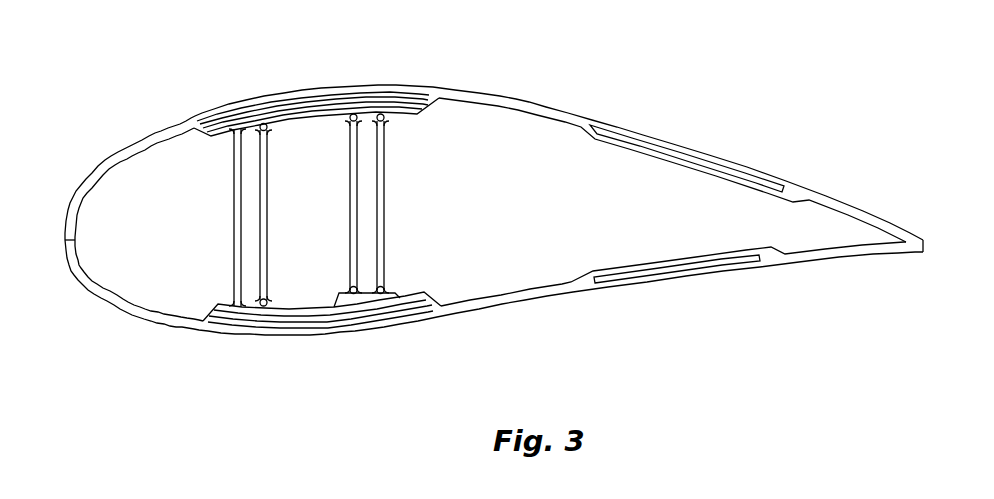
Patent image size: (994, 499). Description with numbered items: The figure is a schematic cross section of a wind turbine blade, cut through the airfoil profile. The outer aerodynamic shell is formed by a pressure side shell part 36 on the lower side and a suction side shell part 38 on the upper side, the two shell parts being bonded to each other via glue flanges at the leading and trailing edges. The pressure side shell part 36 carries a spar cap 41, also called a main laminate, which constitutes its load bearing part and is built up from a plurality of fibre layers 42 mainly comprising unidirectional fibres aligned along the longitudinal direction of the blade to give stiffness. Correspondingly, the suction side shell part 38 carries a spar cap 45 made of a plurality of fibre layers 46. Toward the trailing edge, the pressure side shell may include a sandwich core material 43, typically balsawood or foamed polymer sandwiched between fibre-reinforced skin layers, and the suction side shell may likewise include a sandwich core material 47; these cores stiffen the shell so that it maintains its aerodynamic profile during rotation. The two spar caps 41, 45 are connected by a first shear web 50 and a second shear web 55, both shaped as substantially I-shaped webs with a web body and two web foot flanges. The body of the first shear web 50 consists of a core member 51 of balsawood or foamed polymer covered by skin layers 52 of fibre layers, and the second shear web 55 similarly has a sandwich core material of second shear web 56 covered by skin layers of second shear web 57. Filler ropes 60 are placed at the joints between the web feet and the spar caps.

The pressure side shell part 36 is at (547, 305).
The suction side shell part 38 is at (531, 100).
The spar cap 41 is at (391, 323).
The fibre layers 42 is at (333, 327).
The sandwich core material 43 is at (682, 282).
The spar cap 45 is at (284, 93).
The fibre layers 46 is at (391, 110).
The sandwich core material 47 is at (690, 127).
The first shear web 50 is at (288, 215).
The core member 51 is at (268, 233).
The skin layers 52 is at (268, 167).
The second shear web 55 is at (415, 204).
The sandwich core material of second shear web 56 is at (379, 231).
The skin layers of second shear web 57 is at (387, 179).
The filler ropes 60 is at (380, 288).